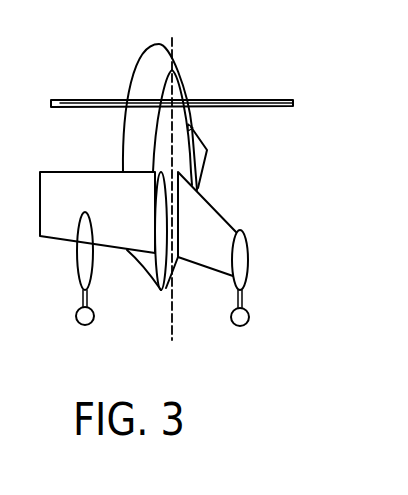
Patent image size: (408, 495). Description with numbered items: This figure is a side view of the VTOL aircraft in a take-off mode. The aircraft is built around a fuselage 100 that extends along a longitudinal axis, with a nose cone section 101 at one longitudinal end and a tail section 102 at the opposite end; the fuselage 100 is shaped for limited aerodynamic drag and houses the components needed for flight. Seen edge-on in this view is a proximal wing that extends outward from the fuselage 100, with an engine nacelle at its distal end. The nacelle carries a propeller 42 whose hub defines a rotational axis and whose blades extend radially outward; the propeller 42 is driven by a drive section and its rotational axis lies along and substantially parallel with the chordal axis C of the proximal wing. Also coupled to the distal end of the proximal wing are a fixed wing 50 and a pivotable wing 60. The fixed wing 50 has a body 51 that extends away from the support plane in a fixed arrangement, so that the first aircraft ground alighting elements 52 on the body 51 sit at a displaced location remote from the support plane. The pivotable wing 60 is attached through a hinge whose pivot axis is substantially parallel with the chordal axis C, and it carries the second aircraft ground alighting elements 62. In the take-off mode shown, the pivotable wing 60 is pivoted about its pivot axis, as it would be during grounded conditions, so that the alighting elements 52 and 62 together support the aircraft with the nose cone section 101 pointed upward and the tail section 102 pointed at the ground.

The propeller 42 is at (294, 104).
The fixed wing 50 is at (220, 248).
The body 51 is at (215, 258).
The first aircraft ground alighting elements 52 is at (246, 310).
The pivotable wing 60 is at (127, 233).
The second aircraft ground alighting elements 62 is at (76, 309).
The fuselage 100 is at (180, 72).
The nose cone section 101 is at (143, 62).
The tail section 102 is at (156, 287).
The chordal axis C is at (176, 142).